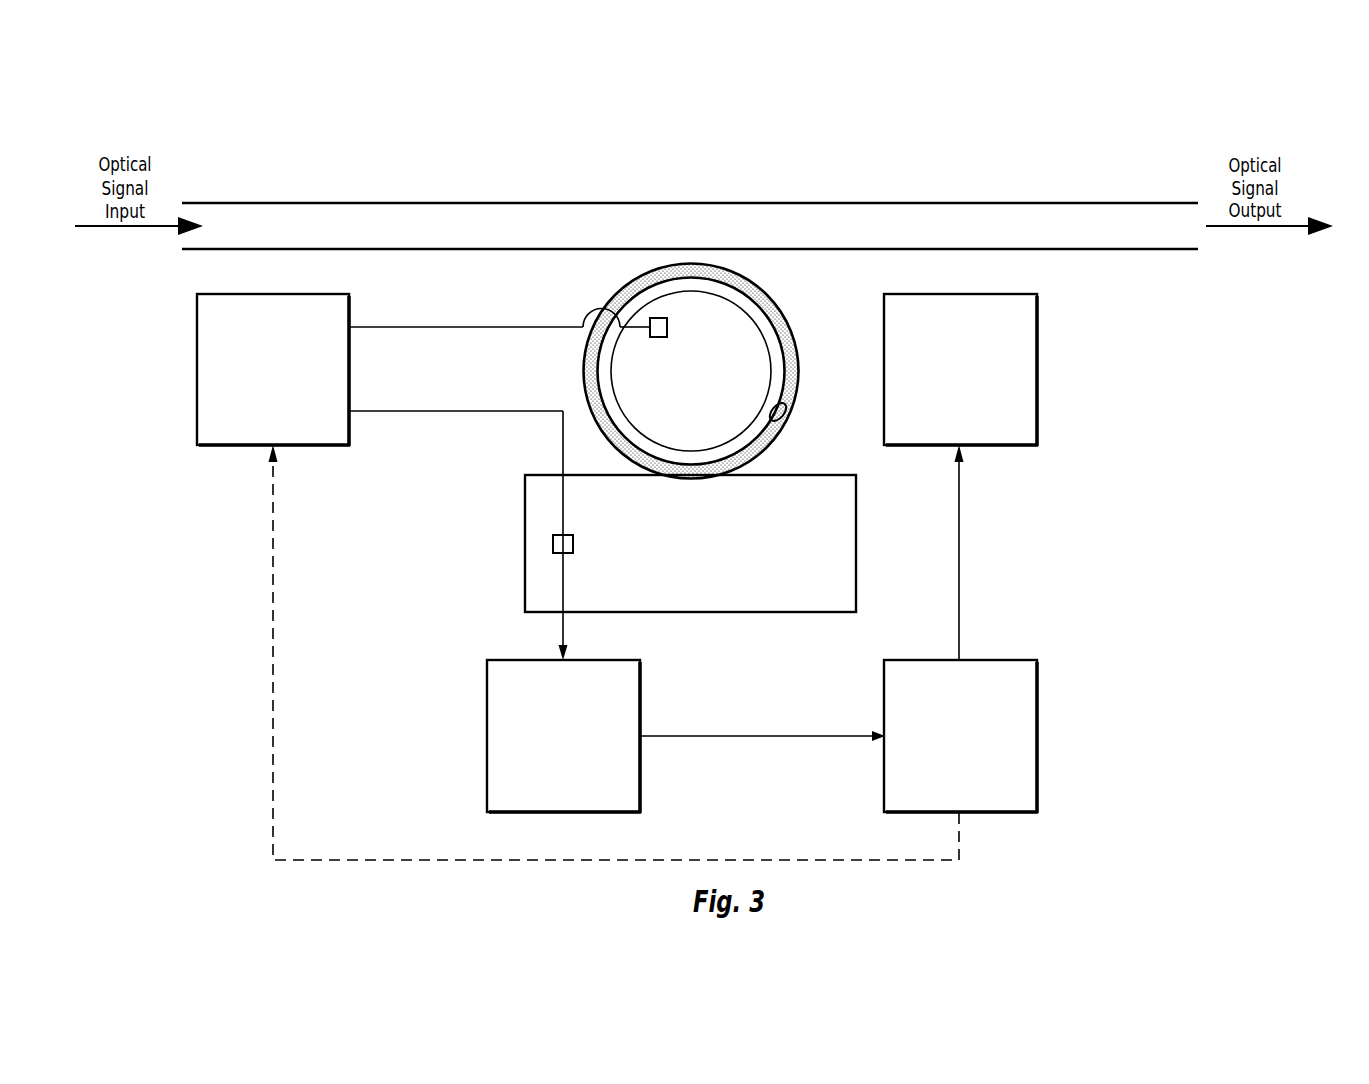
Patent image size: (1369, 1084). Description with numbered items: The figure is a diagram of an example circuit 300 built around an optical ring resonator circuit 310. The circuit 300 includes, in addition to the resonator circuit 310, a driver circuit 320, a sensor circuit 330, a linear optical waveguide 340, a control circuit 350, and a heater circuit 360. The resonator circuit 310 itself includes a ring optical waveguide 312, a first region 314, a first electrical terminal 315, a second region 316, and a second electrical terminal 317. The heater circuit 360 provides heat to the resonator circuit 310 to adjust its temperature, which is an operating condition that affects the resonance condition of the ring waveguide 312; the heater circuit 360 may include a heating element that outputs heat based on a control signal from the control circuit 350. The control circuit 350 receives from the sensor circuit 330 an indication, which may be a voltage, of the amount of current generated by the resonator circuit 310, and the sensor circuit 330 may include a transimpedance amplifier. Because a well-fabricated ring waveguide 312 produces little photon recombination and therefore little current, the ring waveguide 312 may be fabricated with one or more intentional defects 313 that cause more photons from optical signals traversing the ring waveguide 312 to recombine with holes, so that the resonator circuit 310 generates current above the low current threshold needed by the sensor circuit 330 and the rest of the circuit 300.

The circuit 300 is at (1171, 144).
The optical ring resonator circuit 310 is at (728, 366).
The ring optical waveguide 312 is at (795, 338).
The intentional defects 313 is at (792, 410).
The first region 314 is at (675, 555).
The first electrical terminal 315 is at (553, 545).
The second region 316 is at (675, 383).
The second electrical terminal 317 is at (650, 333).
The driver circuit 320 is at (258, 405).
The sensor circuit 330 is at (548, 771).
The linear optical waveguide 340 is at (675, 238).
The control circuit 350 is at (944, 771).
The heater circuit 360 is at (944, 405).